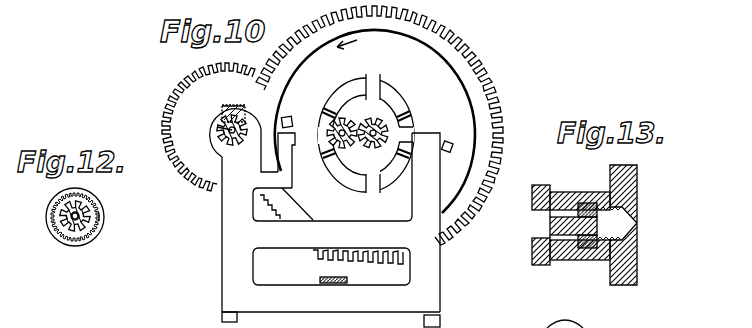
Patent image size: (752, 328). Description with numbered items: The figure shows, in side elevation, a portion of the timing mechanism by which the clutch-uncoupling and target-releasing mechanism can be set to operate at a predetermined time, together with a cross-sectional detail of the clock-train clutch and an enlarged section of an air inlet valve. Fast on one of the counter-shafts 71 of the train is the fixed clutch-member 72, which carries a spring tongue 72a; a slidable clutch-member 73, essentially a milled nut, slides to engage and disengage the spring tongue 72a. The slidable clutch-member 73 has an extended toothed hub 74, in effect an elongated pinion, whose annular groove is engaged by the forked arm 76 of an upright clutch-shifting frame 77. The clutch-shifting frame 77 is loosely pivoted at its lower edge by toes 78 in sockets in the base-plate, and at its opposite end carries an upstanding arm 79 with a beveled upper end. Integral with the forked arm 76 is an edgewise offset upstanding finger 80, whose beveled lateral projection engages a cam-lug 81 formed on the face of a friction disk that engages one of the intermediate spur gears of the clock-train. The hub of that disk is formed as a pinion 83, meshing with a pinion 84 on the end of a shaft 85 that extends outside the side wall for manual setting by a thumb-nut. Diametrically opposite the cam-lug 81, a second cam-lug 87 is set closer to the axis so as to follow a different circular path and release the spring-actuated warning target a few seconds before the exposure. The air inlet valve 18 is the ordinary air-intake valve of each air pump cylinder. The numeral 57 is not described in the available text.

In FIG. 13, the air-intake valve 18 is at (586, 207).
In FIG. 13, the valve part 57 is at (595, 323).
In FIG. 10, the counter-shaft 71 is at (217, 127).
In FIG. 12, the counter-shaft 71 is at (89, 207).
In FIG. 10, the fixed clutch-member 72 is at (224, 104).
In FIG. 12, the fixed clutch-member 72 is at (54, 196).
In FIG. 12, the spring tongue 72a is at (101, 217).
In FIG. 10, the slidable clutch-member 73 is at (238, 104).
In FIG. 12, the slidable clutch-member 73 is at (62, 230).
In FIG. 10, the toothed hub 74 is at (243, 145).
In FIG. 12, the toothed hub 74 is at (80, 199).
In FIG. 10, the forked arm 76 is at (228, 163).
In FIG. 10, the clutch-shifting frame 77 is at (230, 229).
In FIG. 10, the toes 78 is at (221, 314).
In FIG. 10, the upstanding arm 79 is at (432, 165).
In FIG. 10, the upstanding finger 80 is at (283, 158).
In FIG. 10, the cam-lug 81 is at (289, 117).
In FIG. 10, the pinion 83 is at (382, 122).
In FIG. 10, the pinion 84 is at (340, 118).
In FIG. 10, the shaft 85 is at (369, 95).
In FIG. 10, the cam-lug 87 is at (452, 143).